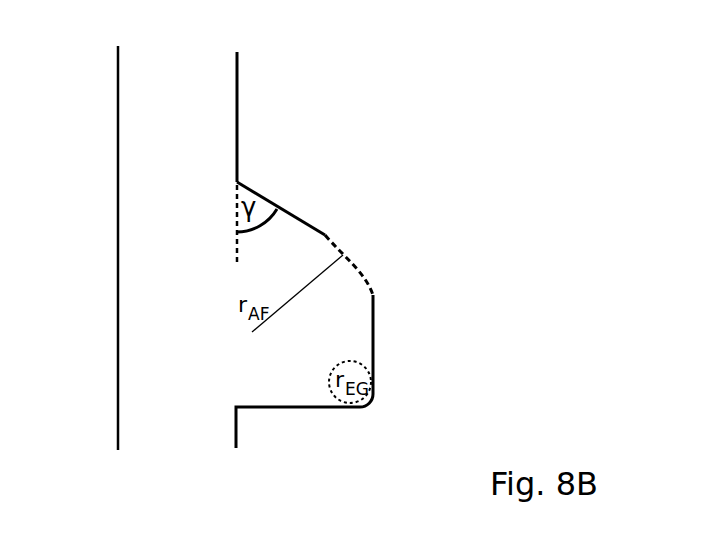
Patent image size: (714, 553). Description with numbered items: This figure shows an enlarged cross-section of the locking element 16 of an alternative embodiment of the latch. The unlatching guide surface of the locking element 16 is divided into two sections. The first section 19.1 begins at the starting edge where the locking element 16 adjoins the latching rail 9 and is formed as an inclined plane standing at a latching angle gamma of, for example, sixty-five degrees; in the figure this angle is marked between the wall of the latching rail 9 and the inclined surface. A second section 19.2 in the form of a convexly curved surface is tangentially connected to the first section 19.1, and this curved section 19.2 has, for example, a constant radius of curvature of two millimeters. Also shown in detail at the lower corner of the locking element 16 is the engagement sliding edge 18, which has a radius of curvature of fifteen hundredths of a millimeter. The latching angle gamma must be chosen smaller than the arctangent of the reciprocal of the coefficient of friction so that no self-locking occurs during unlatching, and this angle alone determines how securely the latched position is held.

The latching rail 9 is at (140, 427).
The locking element 16 is at (278, 383).
The engagement sliding edge 18 is at (376, 407).
The first section 19.1 is at (316, 220).
The second section 19.2 is at (377, 265).